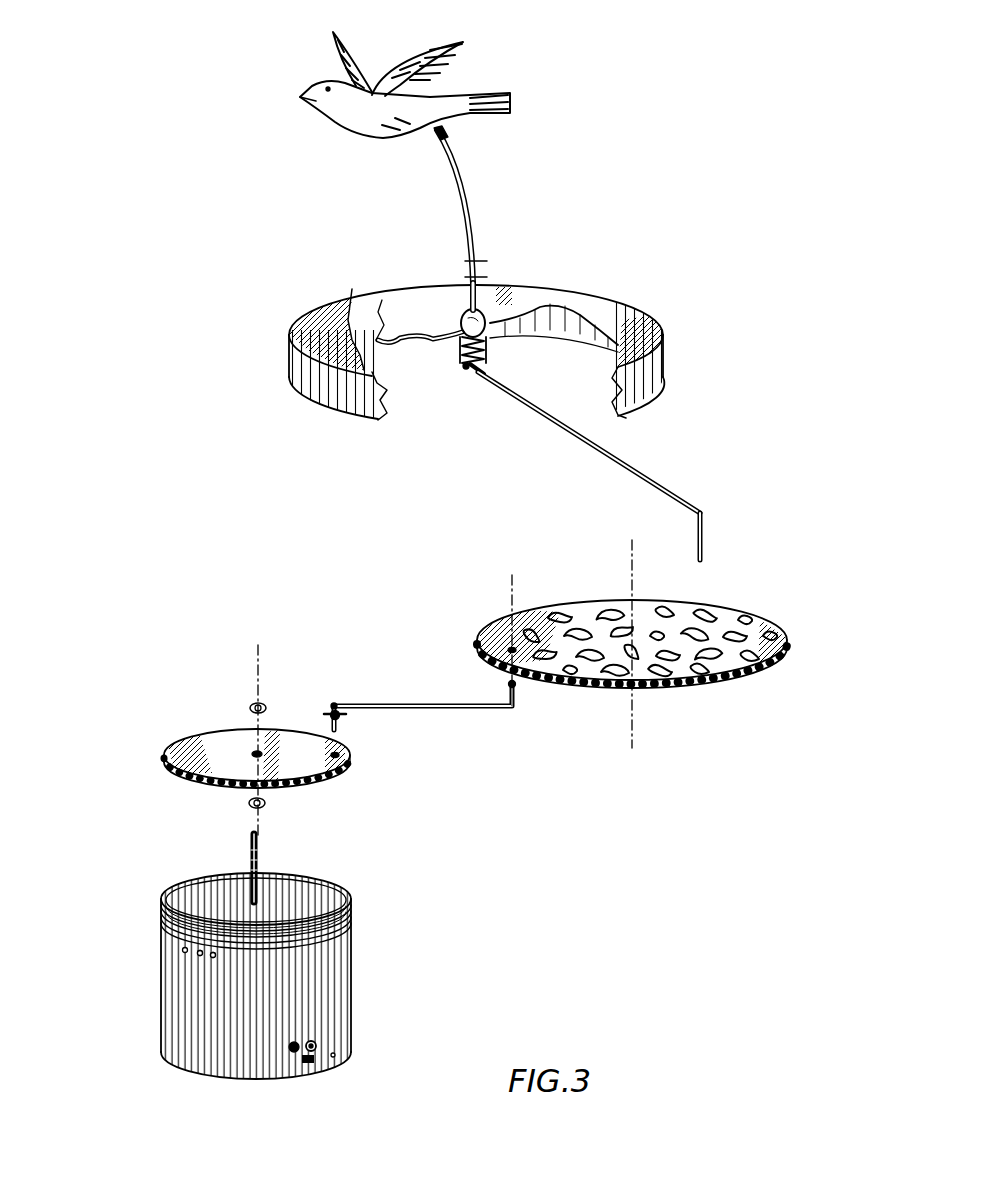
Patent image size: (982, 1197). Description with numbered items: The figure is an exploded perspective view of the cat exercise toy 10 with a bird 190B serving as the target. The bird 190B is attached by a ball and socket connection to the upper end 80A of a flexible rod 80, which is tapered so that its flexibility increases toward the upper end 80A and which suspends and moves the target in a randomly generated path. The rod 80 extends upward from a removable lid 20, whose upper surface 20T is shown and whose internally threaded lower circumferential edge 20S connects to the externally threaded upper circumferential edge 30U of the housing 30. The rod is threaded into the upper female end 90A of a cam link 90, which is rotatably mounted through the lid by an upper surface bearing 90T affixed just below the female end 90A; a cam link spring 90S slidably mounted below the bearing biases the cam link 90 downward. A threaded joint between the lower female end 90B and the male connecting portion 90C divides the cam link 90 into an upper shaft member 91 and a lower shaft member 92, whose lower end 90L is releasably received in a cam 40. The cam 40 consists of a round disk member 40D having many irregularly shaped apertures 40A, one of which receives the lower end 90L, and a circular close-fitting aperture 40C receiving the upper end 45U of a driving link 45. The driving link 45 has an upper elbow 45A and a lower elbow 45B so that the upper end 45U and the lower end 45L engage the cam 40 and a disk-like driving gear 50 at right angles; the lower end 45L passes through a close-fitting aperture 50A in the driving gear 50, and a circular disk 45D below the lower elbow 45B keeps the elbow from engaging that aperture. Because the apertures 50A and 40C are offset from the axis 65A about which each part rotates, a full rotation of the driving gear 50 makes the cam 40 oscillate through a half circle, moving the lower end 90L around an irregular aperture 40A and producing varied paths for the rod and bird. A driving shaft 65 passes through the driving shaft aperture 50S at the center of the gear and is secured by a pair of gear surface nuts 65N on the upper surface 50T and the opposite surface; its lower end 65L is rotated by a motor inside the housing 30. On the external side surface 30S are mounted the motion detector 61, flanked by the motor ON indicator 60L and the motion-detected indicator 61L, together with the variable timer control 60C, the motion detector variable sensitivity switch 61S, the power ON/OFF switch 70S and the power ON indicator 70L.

The cat exercise toy 10 is at (574, 82).
The bird 190B is at (330, 122).
The flexible rod 80 is at (480, 183).
The upper end of flexible rod 80A is at (447, 134).
The removable lid 20 is at (438, 338).
The upper surface of lid 20T is at (625, 335).
The lower circumferential edge of lid 20S is at (648, 378).
The cam link 90 is at (559, 391).
The upper surface bearing 90T is at (466, 315).
The upper female end of cam link 90A is at (480, 300).
The cam link spring 90S is at (488, 350).
The upper shaft member 91 is at (458, 372).
The lower female end of cam link 90B is at (480, 378).
The lower shaft member 92 is at (639, 466).
The male connecting portion 90C is at (520, 403).
The lower end of cam link 90L is at (710, 538).
The cam 40 is at (638, 615).
The irregularly shaped apertures 40A is at (765, 637).
The circular close-fitting aperture 40C is at (513, 648).
The round disk member 40D is at (497, 626).
The axis 65A is at (632, 572).
The driving link 45 is at (467, 726).
The lower end of driving link 45L is at (338, 726).
The circular disk 45D is at (345, 720).
The lower elbow 45B is at (333, 703).
The upper end of driving link 45U is at (518, 690).
The upper elbow 45A is at (515, 720).
The driving gear 50 is at (204, 690).
The upper surface of driving gear 50T is at (205, 752).
The driving shaft aperture 50S is at (256, 751).
The close-fitting aperture 50A is at (335, 752).
The driving shaft 65 is at (253, 754).
The gear surface nuts 65N is at (258, 705).
The lower end of driving shaft 65L is at (250, 895).
The housing 30 is at (265, 1012).
The external side surface of housing 30S is at (300, 1016).
The upper circumferential edge of housing 30U is at (352, 928).
The motor ON indicator 60L is at (182, 949).
The motion detector 61 is at (199, 955).
The motion-detected indicator 61L is at (212, 957).
The variable timer control 60C is at (294, 1053).
The motion detector variable sensitivity switch 61S is at (318, 1047).
The power ON indicator 70L is at (334, 1058).
The power ON/OFF switch 70S is at (316, 1052).